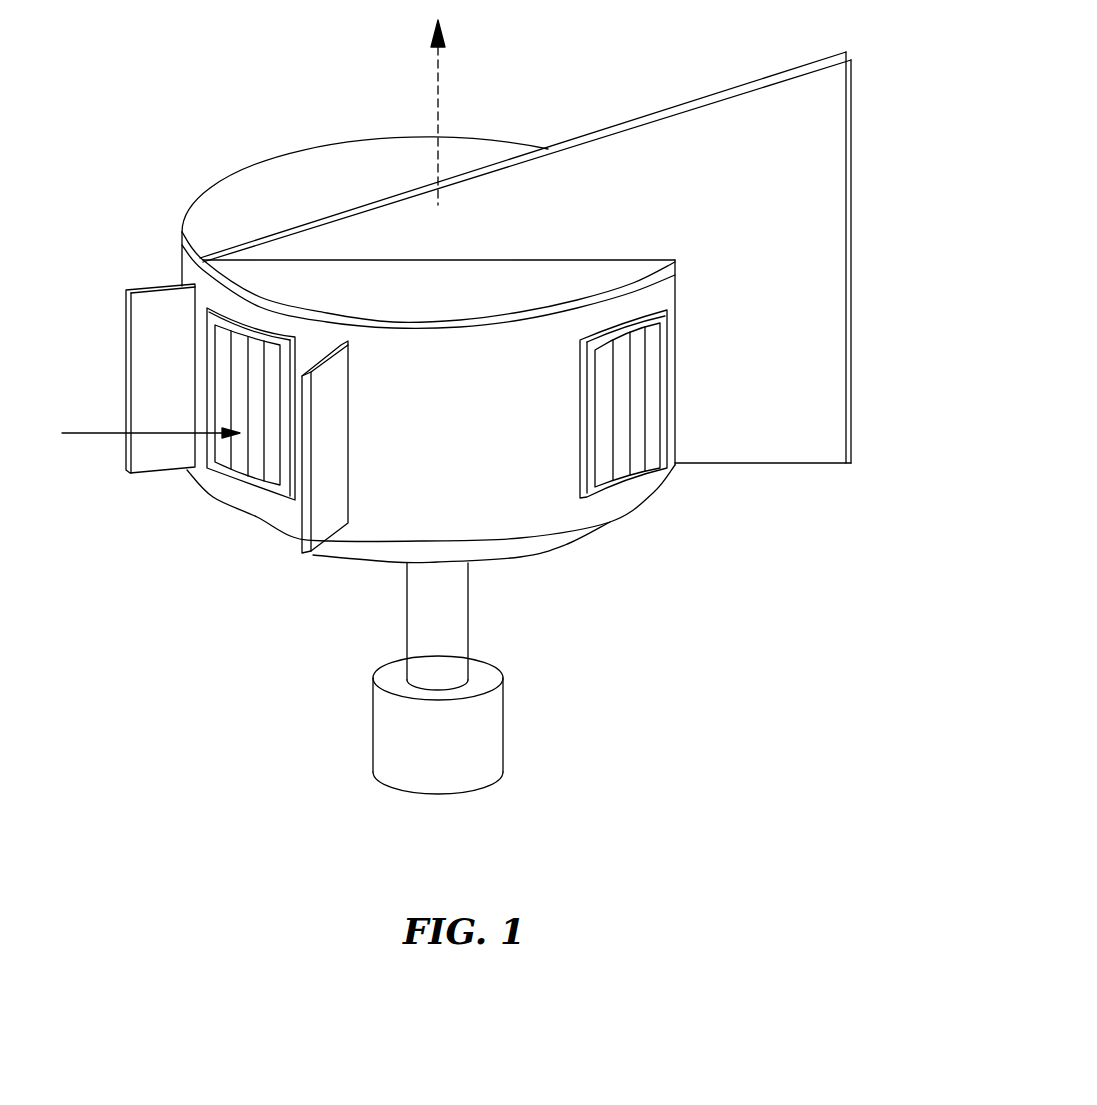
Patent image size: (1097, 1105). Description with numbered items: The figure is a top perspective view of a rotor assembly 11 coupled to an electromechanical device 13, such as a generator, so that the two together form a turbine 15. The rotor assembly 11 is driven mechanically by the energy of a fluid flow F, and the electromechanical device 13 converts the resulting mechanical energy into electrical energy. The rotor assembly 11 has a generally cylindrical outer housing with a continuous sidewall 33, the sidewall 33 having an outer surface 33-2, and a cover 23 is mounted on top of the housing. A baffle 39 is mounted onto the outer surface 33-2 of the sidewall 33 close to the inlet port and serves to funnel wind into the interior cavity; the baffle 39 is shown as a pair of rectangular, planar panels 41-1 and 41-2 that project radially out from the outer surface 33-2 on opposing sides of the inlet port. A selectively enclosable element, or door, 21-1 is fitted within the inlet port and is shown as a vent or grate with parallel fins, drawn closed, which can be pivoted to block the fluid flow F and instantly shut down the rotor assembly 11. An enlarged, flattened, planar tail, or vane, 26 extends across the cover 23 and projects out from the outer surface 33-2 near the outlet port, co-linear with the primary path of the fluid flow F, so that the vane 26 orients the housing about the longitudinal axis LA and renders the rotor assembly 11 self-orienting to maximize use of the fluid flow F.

The rotor assembly 11 is at (530, 513).
The electromechanical device 13 is at (442, 756).
The turbine 15 is at (630, 640).
The selectively enclosable element 21-1 is at (238, 478).
The cover 23 is at (280, 170).
The vane 26 is at (750, 443).
The sidewall 33 is at (653, 490).
The outer surface 33-2 is at (490, 353).
The baffle 39 is at (364, 401).
The planar panel 41-1 is at (153, 355).
The planar panel 41-2 is at (332, 500).
The longitudinal axis LA is at (438, 68).
The fluid flow F is at (105, 438).